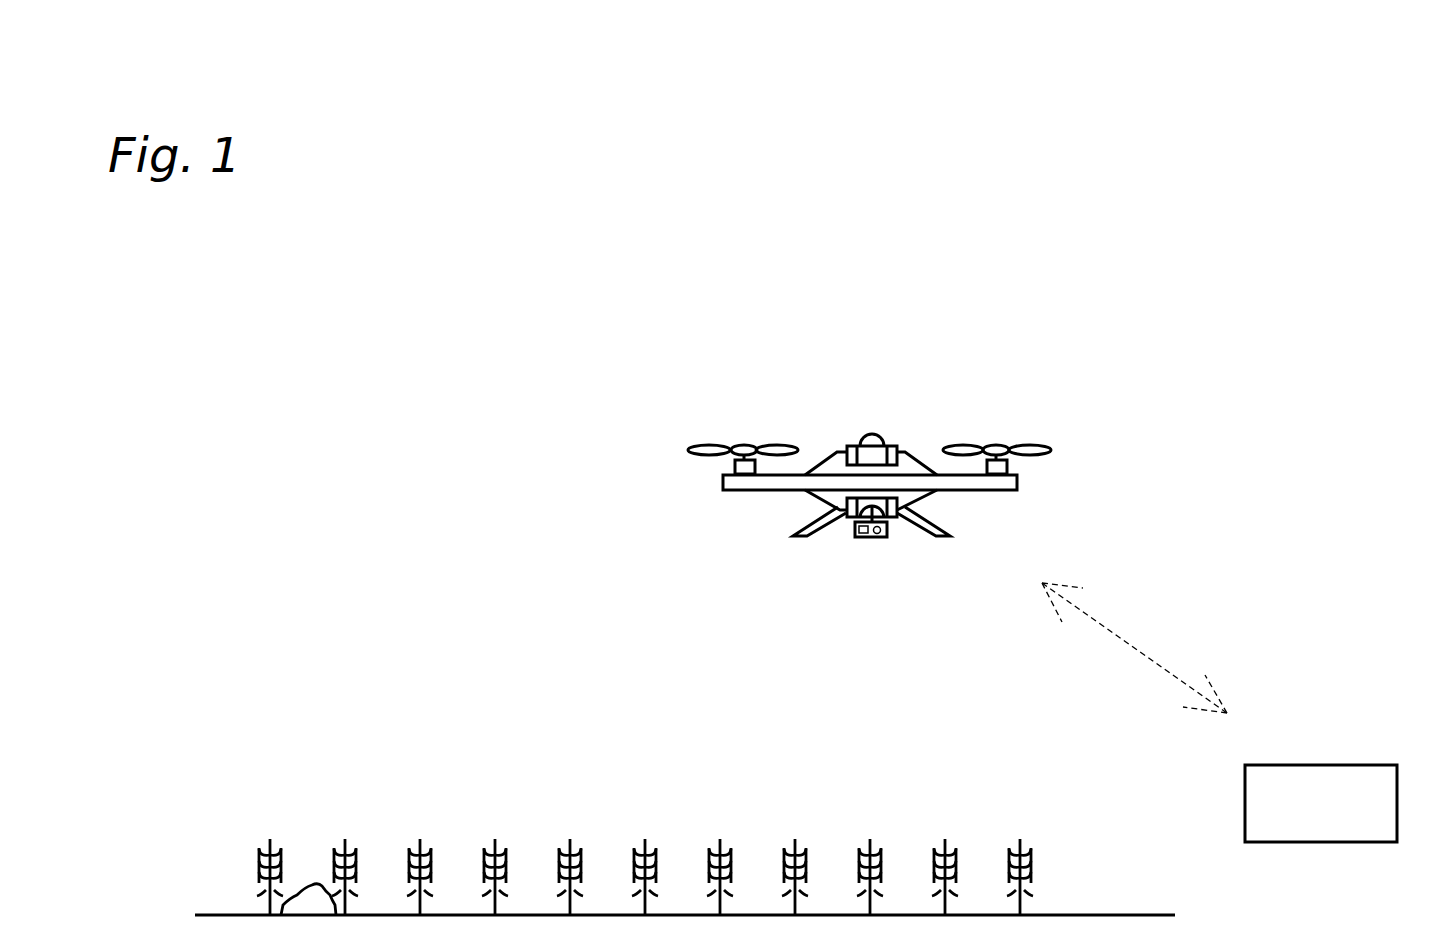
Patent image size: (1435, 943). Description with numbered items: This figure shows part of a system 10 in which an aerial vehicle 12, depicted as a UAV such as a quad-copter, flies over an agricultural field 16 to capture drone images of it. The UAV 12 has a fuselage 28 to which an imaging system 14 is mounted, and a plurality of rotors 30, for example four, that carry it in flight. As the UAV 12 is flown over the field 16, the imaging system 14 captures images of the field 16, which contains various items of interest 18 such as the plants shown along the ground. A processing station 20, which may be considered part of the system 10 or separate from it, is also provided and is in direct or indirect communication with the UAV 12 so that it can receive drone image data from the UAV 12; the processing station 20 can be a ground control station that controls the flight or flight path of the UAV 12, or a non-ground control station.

The system 10 is at (422, 316).
The aerial vehicle 12 is at (871, 480).
The imaging system 14 is at (885, 537).
The agricultural field 16 is at (1075, 827).
The items of interest 18 is at (310, 882).
The processing station 20 is at (1353, 765).
The fuselage 28 is at (833, 490).
The rotors 30 is at (700, 445).